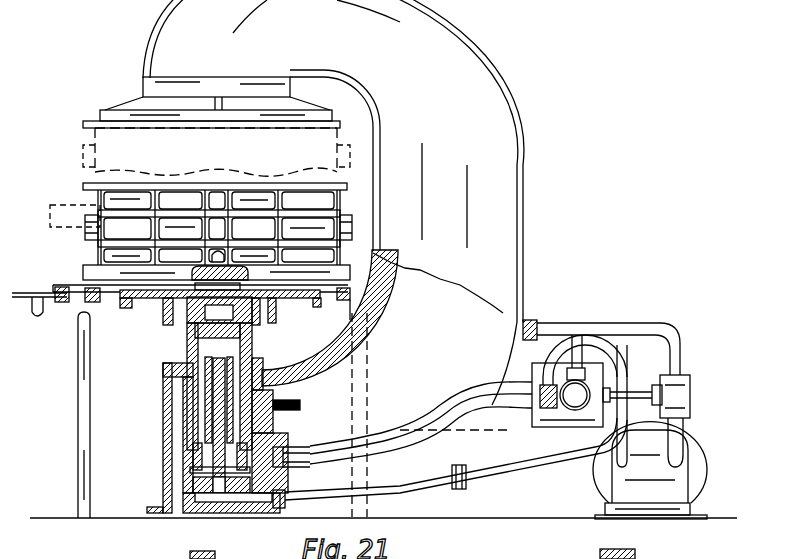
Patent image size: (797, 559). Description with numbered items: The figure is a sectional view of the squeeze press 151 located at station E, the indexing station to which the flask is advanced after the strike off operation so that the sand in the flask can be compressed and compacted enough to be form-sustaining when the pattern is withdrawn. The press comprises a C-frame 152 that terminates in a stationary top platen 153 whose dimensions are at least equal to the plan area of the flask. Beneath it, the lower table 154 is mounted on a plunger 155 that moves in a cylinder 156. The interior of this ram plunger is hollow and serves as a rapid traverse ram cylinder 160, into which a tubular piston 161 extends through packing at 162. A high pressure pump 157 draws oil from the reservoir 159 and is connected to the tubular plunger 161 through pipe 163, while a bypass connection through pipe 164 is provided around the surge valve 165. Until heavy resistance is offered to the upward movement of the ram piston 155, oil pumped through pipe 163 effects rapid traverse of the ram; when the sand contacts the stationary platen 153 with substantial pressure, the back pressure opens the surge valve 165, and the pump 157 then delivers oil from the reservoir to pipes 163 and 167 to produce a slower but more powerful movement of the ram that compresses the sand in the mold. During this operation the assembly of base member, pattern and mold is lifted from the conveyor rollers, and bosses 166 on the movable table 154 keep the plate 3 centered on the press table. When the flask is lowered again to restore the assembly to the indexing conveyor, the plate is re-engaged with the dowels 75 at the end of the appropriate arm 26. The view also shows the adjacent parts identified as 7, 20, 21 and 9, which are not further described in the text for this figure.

The squeeze press 151 is at (500, 85).
The C-frame 152 is at (503, 313).
The top platen 153 is at (107, 115).
The heat exchanger cage 7 is at (330, 200).
The plate 3 is at (53, 285).
The arm 26 is at (37, 293).
The dowels 75 is at (63, 303).
The bracket 20 is at (93, 303).
The bracket 21 is at (346, 304).
The lower table 154 is at (303, 303).
The bosses 166 is at (190, 302).
The plunger 155 is at (188, 337).
The cylinder 156 is at (173, 388).
The rapid traverse ram cylinder 160 is at (205, 393).
The tubular piston 161 is at (220, 405).
The packing 162 is at (203, 462).
The pipe 167 is at (425, 410).
The pipe 163 is at (517, 472).
The pipe 164 is at (607, 327).
The surge valve 165 is at (594, 374).
The high pressure pump 157 is at (697, 452).
The reservoir 159 is at (695, 508).
The station E is at (66, 427).
The fitting 9 is at (636, 555).